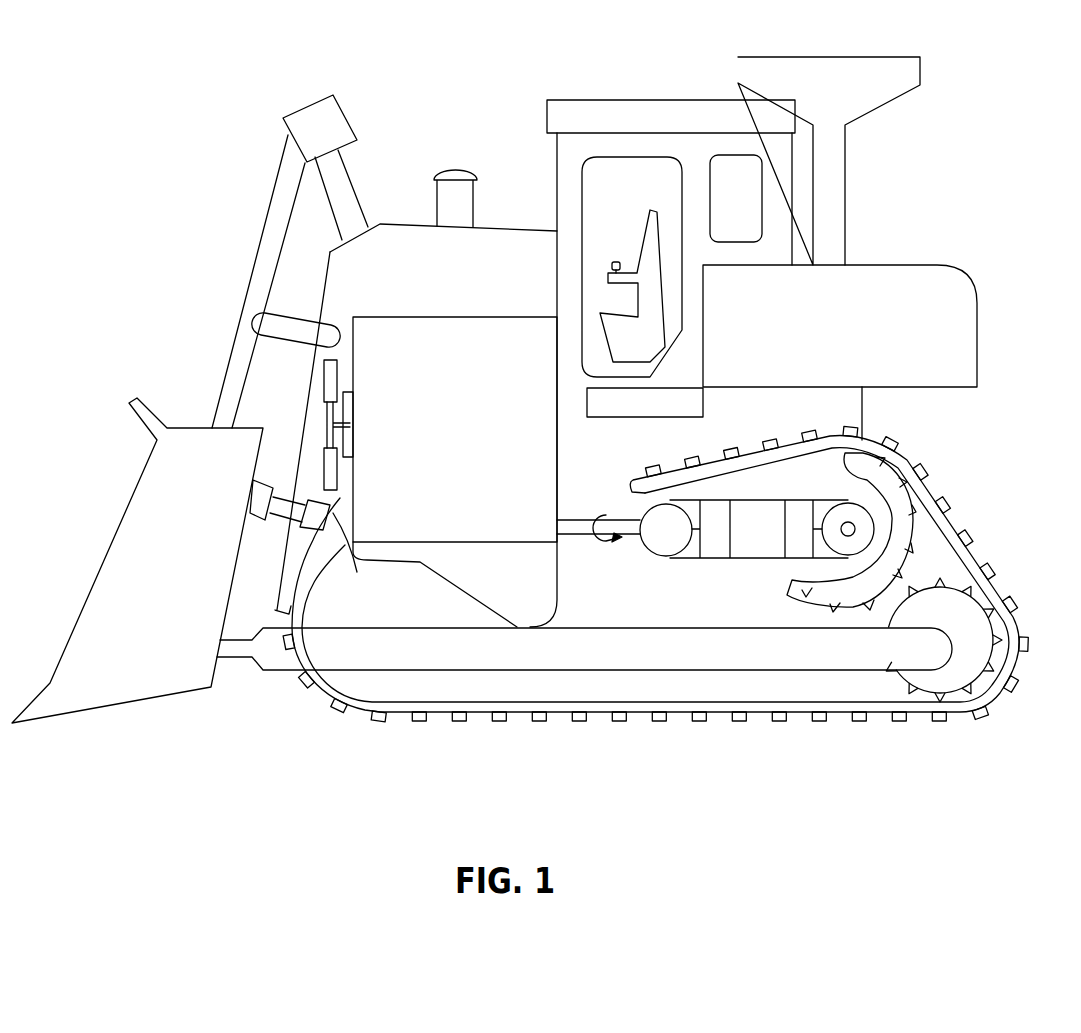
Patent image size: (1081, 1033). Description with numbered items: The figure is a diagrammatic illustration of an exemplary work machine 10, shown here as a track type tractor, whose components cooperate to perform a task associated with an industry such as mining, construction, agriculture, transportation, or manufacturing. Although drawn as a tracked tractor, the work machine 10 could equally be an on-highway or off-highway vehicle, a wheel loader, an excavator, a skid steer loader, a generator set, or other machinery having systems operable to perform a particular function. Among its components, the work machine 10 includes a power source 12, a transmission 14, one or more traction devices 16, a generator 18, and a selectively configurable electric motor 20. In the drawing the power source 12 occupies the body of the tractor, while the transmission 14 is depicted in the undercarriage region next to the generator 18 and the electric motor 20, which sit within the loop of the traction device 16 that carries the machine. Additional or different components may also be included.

The work machine 10 is at (531, 410).
The power source 12 is at (461, 433).
The transmission 14 is at (622, 602).
The traction device 16 is at (905, 445).
The generator 18 is at (680, 543).
The selectively configurable electric motor 20 is at (848, 503).